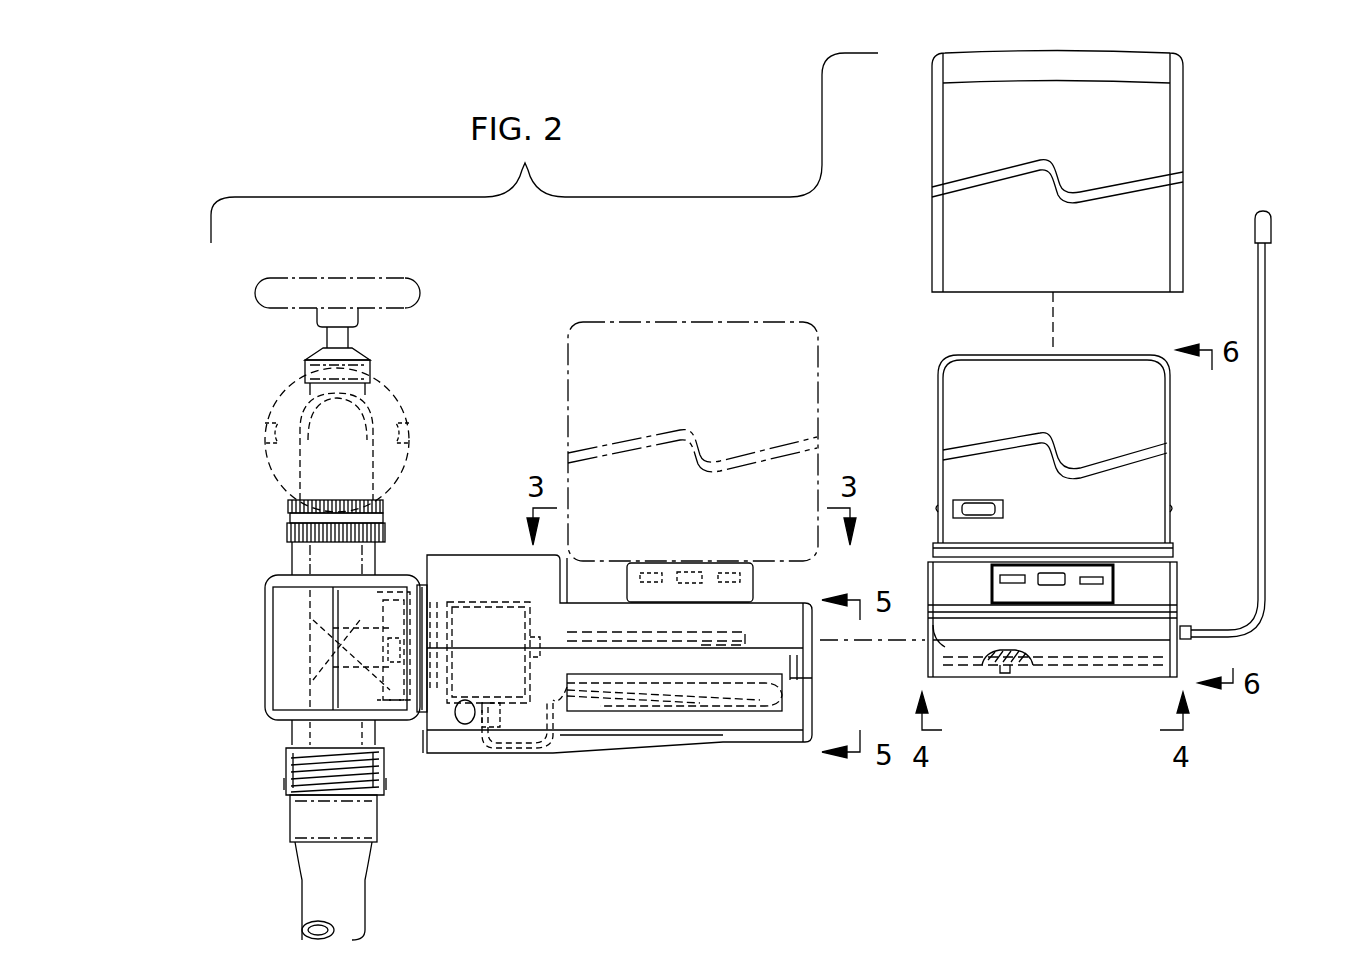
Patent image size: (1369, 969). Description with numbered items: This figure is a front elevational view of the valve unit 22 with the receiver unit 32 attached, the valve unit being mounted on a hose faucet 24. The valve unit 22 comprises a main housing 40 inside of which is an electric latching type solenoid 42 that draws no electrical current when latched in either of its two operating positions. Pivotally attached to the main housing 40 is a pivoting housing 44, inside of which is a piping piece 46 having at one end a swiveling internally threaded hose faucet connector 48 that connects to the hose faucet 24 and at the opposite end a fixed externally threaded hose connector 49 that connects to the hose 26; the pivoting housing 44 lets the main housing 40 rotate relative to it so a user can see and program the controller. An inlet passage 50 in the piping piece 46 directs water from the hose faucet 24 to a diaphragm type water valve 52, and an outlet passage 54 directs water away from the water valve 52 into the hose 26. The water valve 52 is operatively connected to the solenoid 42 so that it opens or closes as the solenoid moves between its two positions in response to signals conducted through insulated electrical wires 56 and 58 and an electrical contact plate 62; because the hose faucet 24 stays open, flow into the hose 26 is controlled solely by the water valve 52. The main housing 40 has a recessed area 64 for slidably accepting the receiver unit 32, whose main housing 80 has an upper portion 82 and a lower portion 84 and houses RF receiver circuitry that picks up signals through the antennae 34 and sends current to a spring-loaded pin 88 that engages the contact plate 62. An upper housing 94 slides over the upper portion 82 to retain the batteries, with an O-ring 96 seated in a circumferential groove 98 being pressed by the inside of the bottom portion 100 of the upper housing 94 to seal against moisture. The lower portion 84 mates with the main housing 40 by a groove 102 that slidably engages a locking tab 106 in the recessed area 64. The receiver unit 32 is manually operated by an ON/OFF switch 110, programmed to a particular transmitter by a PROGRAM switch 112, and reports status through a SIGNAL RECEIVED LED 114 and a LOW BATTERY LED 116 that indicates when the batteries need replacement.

The valve unit 22 is at (672, 748).
The hose faucet 24 is at (282, 475).
The hose 26 is at (300, 893).
The receiver unit 32 is at (558, 364).
The antennae 34 is at (1260, 422).
The main housing 40 is at (775, 742).
The electric latching type solenoid 42 is at (476, 612).
The pivoting housing 44 is at (267, 652).
The piping piece 46 is at (292, 561).
The swiveling internally threaded hose faucet connector 48 is at (383, 505).
The fixed externally threaded hose connector 49 is at (292, 732).
The inlet passage 50 is at (318, 607).
The diaphragm type water valve 52 is at (397, 572).
The outlet passage 54 is at (317, 683).
The insulated electrical wire 56 is at (632, 698).
The insulated electrical wire 58 is at (728, 712).
The electrical contact plate 62 is at (800, 672).
The recessed area 64 is at (795, 590).
The main housing 80 is at (1168, 472).
The upper portion 82 is at (1170, 395).
The lower portion 84 is at (1177, 600).
The electrical spring-loaded pin 88 is at (1003, 670).
The upper housing 94 is at (1180, 118).
The O-ring 96 is at (1168, 548).
The circumferential groove 98 is at (1098, 563).
The bottom portion 100 is at (963, 287).
The groove 102 is at (1107, 641).
The locking tab 106 is at (700, 630).
The ON/OFF switch 110 is at (1056, 566).
The PROGRAM switch 112 is at (980, 500).
The SIGNAL RECEIVED LED 114 is at (1002, 576).
The LOW BATTERY LED 116 is at (1100, 577).